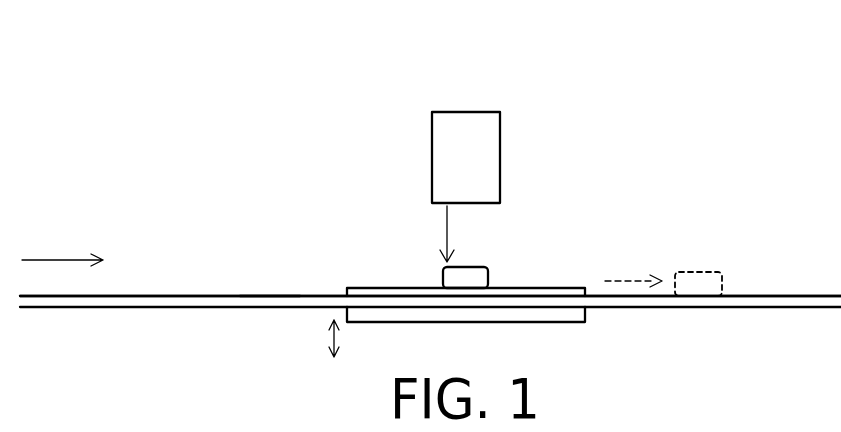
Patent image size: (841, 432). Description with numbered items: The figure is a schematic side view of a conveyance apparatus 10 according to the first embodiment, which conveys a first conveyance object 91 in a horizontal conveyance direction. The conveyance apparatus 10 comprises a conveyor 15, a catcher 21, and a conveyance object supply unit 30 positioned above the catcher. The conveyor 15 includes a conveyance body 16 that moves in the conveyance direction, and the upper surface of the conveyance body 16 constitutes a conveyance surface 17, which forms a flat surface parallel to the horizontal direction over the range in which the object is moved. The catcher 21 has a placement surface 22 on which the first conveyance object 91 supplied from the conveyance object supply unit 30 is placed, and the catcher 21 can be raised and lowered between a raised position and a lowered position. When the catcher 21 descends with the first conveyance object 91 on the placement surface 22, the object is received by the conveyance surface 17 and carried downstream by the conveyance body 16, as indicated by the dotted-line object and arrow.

The conveyance apparatus 10 is at (688, 72).
The conveyor 15 is at (430, 261).
The conveyance body 16 is at (163, 302).
The conveyance surface 17 is at (272, 295).
The catcher 21 is at (578, 288).
The placement surface 22 is at (526, 288).
The conveyance object supply unit 30 is at (468, 123).
The first conveyance object 91 is at (479, 272).